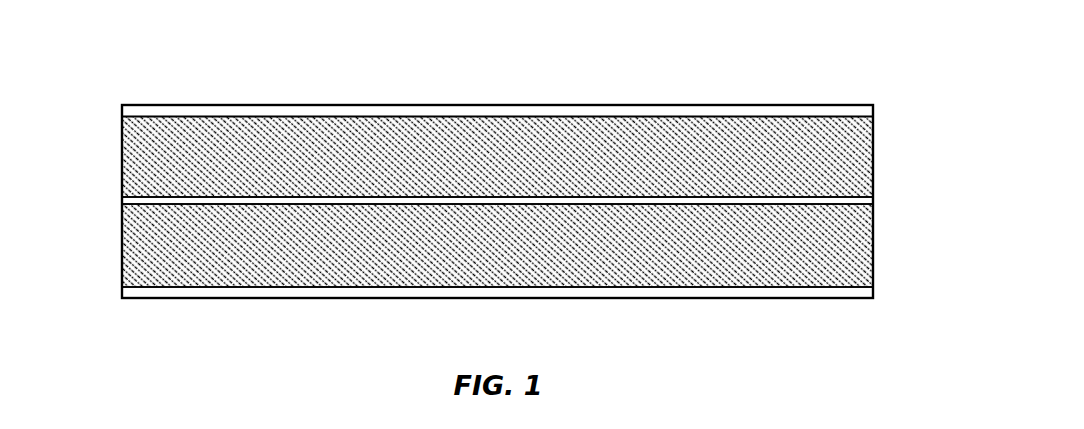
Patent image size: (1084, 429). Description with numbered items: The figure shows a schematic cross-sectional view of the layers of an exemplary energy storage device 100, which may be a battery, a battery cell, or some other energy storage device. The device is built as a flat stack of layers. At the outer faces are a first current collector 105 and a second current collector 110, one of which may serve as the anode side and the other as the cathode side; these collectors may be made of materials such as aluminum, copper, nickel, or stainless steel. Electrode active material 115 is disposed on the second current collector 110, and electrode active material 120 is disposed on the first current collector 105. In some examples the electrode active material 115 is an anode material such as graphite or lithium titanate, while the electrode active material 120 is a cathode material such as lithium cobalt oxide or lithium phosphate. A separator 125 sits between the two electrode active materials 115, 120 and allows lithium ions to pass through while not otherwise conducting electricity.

The energy storage device 100 is at (134, 76).
The first current collector 105 is at (290, 299).
The second current collector 110 is at (722, 105).
The electrode active material 115 is at (874, 150).
The electrode active material 120 is at (874, 250).
The separator 125 is at (121, 200).